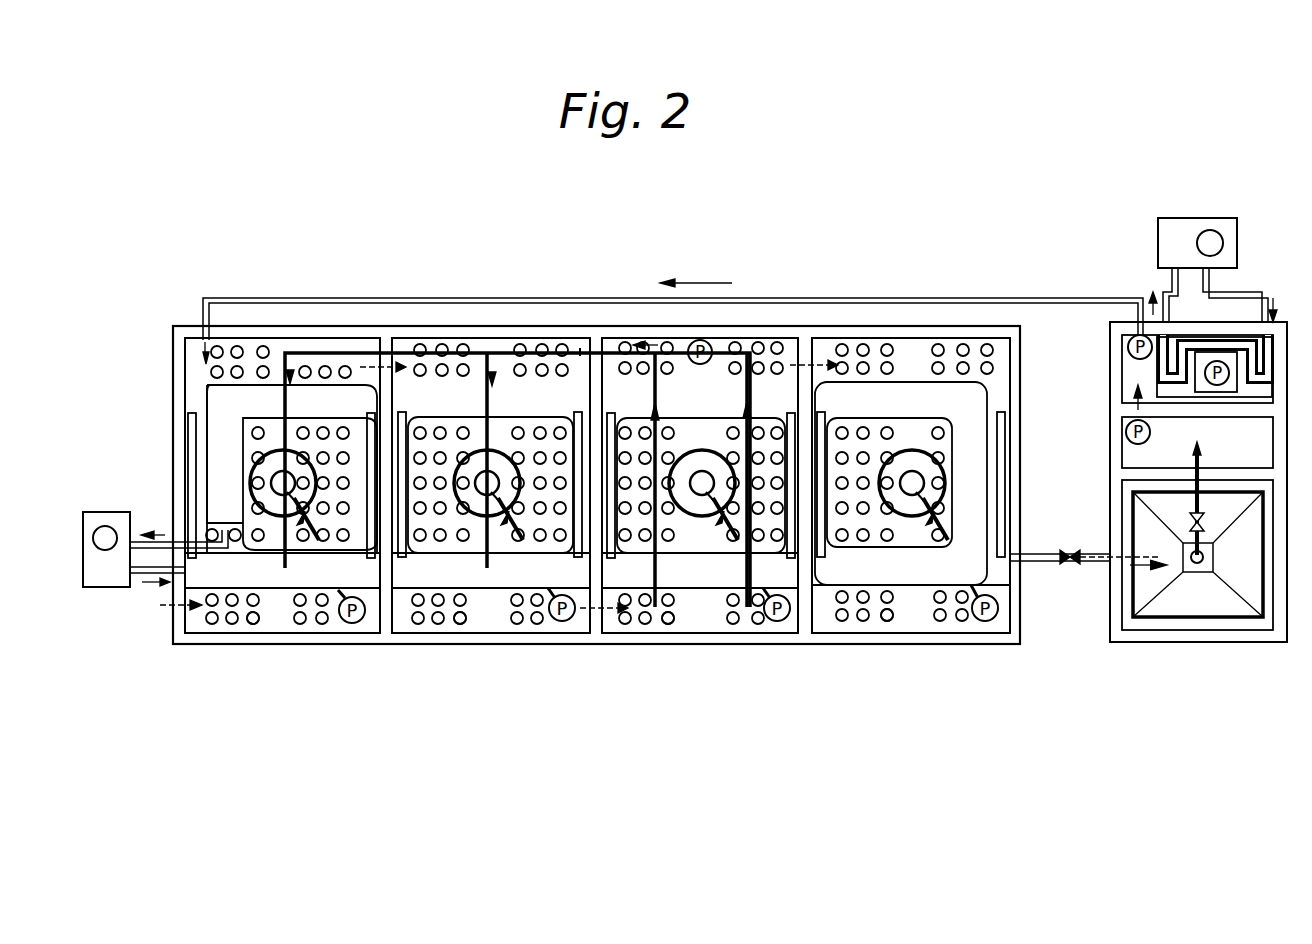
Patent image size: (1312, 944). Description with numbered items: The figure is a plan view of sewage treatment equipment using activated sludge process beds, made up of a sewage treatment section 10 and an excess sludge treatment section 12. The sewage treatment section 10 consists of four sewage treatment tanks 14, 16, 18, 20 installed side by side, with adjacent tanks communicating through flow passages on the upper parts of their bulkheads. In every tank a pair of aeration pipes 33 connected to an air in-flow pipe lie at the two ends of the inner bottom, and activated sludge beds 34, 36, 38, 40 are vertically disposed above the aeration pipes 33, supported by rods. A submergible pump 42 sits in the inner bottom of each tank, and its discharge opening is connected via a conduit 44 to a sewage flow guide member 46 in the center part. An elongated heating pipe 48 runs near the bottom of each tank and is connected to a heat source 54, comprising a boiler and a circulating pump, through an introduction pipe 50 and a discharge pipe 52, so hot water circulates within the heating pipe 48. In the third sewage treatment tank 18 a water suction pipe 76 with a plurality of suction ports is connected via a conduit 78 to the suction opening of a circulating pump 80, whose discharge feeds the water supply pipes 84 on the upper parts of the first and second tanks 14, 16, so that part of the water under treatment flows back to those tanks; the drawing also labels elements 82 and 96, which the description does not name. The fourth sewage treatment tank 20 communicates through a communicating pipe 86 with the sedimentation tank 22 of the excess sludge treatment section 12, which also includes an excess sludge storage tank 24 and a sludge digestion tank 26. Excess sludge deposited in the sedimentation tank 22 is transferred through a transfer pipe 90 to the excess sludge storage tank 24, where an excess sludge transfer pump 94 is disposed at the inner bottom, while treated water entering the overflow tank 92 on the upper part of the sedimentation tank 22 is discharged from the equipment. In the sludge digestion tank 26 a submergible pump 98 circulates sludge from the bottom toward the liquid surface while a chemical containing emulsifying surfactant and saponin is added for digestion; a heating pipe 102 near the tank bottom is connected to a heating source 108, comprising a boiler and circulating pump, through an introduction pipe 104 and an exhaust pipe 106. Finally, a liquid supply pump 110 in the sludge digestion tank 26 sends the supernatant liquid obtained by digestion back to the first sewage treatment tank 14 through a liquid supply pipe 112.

The sewage treatment section 10 is at (583, 662).
The excess sludge treatment section 12 is at (1182, 668).
The first sewage treatment tank 14 is at (225, 646).
The second sewage treatment tank 16 is at (418, 646).
The third sewage treatment tank 18 is at (615, 646).
The fourth sewage treatment tank 20 is at (840, 646).
The sedimentation tank 22 is at (1128, 643).
The excess sludge storage tank 24 is at (1120, 440).
The sludge digestion tank 26 is at (1120, 355).
The aeration pipe 33 is at (186, 432).
The activated sludge bed 34 is at (255, 625).
The activated sludge bed 36 is at (460, 625).
The activated sludge bed 38 is at (668, 625).
The activated sludge bed 40 is at (887, 622).
The submergible pump 42 is at (355, 623).
The conduit 44 is at (344, 596).
The sewage flow guide member 46 is at (268, 455).
The heating pipe 48 is at (487, 580).
The introduction pipe 50 is at (142, 580).
The discharge pipe 52 is at (138, 537).
The heat source 54 is at (100, 512).
The water suction pipe 76 is at (742, 440).
The conduit 78 is at (748, 343).
The circulating pump 80 is at (690, 343).
The pipe 82 is at (581, 348).
The water supply pipe 84 is at (284, 350).
The communicating pipe 86 is at (1088, 565).
The transfer pipe 90 is at (1180, 507).
The overflow tank 92 is at (1232, 622).
The excess sludge transfer pump 94 is at (1127, 438).
The pump 96 is at (1126, 402).
The submergible pump 98 is at (1222, 386).
The heating pipe 102 is at (1175, 390).
The introduction pipe 104 is at (1248, 295).
The exhaust pipe 106 is at (1165, 297).
The heating source 108 is at (1175, 220).
The liquid supply pump 110 is at (1130, 340).
The liquid supply pipe 112 is at (897, 297).